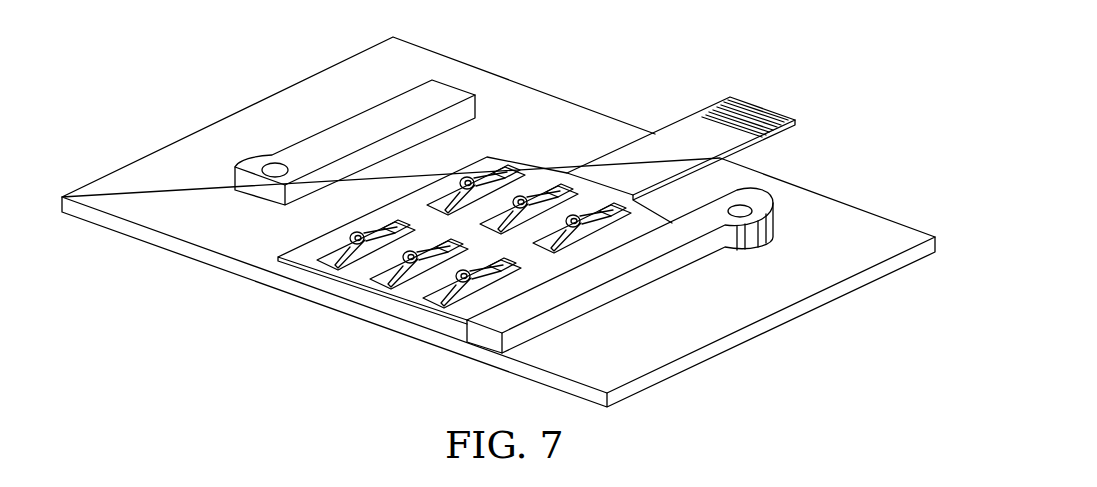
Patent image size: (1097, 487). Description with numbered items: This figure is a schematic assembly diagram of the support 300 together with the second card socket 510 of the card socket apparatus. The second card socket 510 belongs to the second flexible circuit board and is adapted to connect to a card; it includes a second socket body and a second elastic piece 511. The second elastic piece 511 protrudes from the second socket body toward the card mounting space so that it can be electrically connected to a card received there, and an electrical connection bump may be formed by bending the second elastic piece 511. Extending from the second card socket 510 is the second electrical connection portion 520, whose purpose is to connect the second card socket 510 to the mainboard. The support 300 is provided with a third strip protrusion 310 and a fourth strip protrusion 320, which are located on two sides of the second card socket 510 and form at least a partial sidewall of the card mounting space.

The support 300 is at (250, 127).
The third strip protrusion 310 is at (605, 266).
The fourth strip protrusion 320 is at (373, 122).
The second card socket 510 is at (315, 247).
The second elastic piece 511 is at (480, 177).
The second electrical connection portion 520 is at (717, 108).